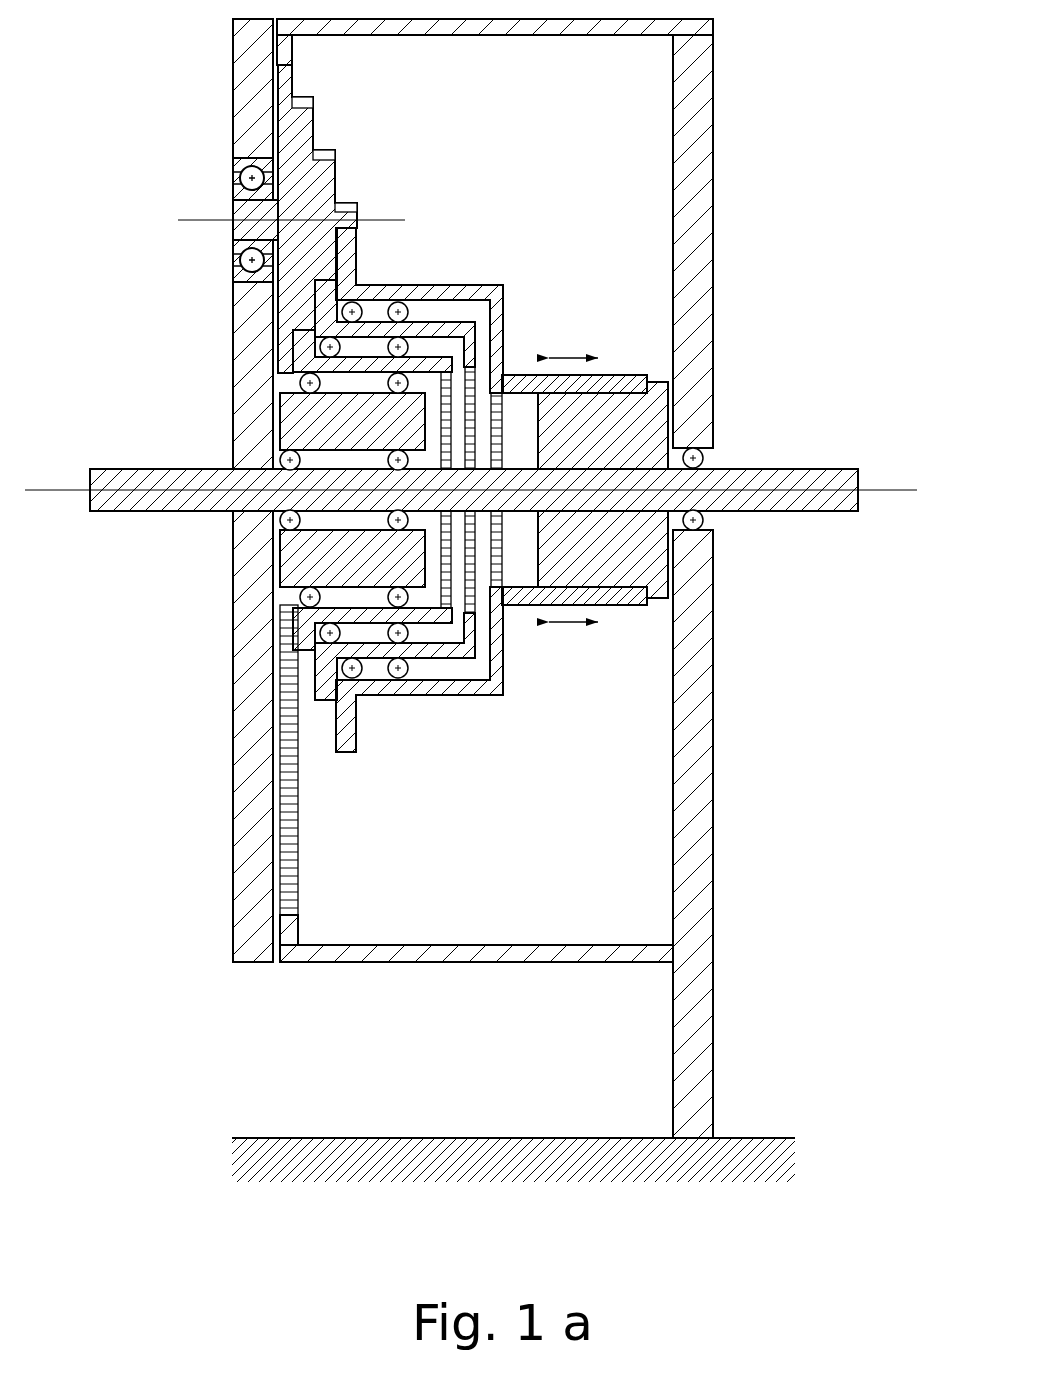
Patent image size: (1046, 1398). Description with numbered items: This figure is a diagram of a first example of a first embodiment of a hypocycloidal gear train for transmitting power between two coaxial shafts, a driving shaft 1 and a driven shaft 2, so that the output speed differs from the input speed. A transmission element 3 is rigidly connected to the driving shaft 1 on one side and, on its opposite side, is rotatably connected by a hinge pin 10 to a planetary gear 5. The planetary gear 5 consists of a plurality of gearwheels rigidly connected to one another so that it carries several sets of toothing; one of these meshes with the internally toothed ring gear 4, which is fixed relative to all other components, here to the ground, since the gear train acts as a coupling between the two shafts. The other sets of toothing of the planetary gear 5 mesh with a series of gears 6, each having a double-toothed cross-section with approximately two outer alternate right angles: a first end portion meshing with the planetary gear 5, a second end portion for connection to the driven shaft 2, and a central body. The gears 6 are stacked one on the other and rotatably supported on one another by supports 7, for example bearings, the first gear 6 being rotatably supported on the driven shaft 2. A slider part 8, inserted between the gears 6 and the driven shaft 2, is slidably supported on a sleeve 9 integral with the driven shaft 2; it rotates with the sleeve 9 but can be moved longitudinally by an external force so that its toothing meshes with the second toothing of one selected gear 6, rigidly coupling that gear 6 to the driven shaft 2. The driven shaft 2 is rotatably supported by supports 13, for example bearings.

The driving shaft 1 is at (195, 470).
The driven shaft 2 is at (810, 467).
The transmission element 3 is at (232, 737).
The ring gear 4 is at (297, 53).
The planetary gear 5 is at (340, 178).
The gears 6 is at (385, 283).
The supports 7 is at (405, 300).
The slider part 8 is at (652, 375).
The sleeve 9 is at (652, 425).
The hinge pin 10 is at (252, 191).
The supports 13 is at (702, 457).